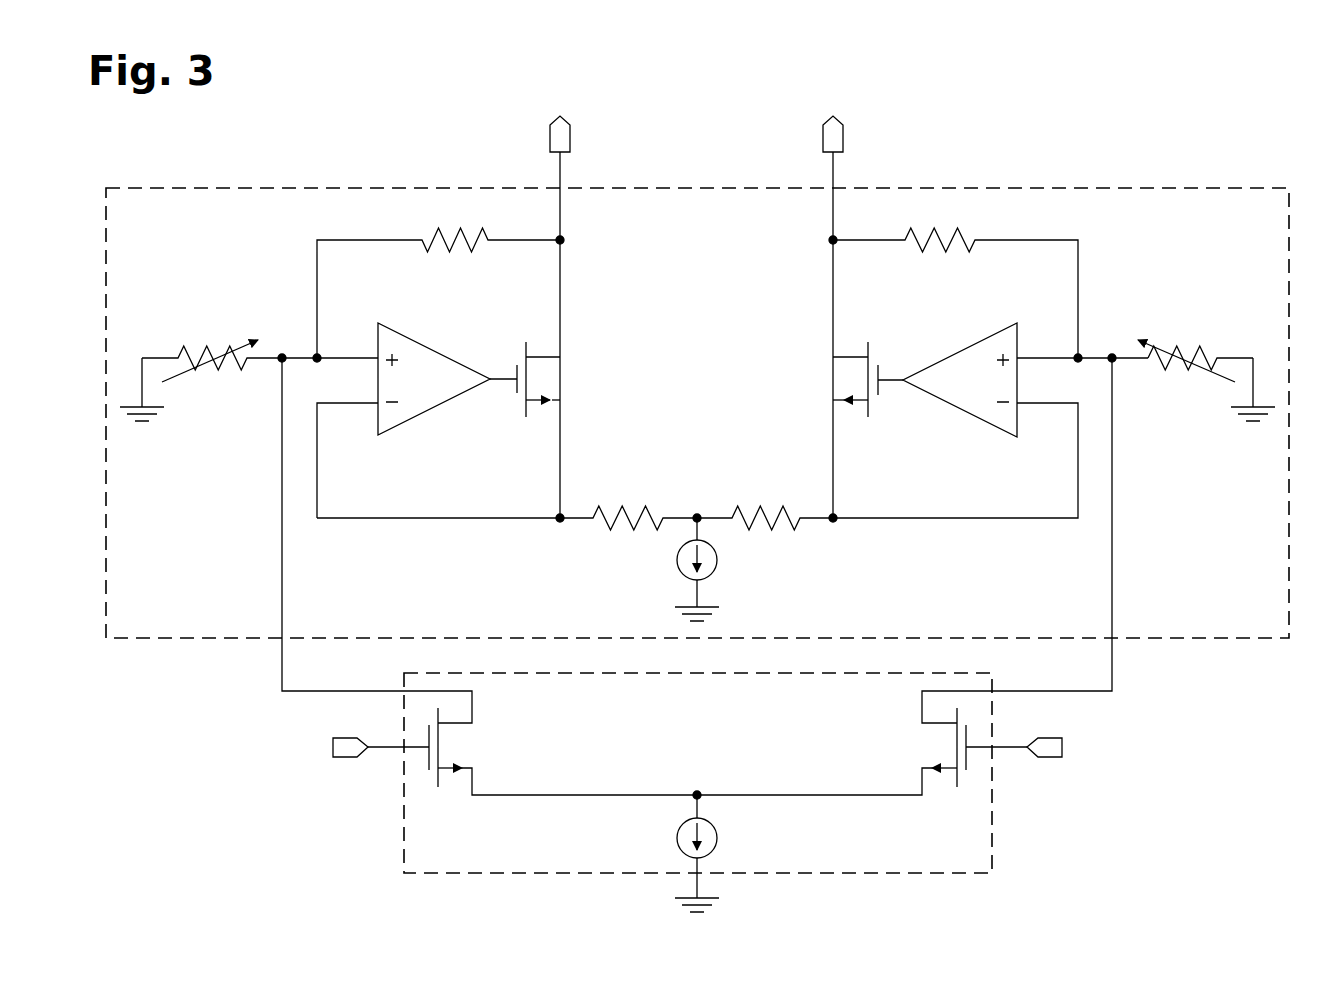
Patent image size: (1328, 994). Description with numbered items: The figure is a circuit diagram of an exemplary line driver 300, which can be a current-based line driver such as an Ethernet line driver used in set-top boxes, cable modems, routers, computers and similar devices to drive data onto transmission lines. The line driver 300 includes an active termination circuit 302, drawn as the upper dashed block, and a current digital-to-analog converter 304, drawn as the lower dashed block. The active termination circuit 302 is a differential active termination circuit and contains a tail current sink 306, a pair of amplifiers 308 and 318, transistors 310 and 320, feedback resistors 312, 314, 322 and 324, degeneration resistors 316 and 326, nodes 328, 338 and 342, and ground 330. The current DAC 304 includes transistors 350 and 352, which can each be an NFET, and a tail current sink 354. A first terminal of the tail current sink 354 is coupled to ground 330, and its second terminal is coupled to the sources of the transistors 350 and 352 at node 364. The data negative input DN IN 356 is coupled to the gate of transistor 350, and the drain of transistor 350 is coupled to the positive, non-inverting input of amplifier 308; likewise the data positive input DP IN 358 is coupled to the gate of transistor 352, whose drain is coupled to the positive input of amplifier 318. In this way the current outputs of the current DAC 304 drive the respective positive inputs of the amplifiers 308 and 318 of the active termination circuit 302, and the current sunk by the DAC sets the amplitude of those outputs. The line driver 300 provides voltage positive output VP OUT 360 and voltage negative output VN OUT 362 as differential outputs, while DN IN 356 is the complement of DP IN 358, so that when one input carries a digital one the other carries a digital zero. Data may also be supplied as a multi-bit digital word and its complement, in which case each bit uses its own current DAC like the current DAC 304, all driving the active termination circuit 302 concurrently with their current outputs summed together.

The line driver 300 is at (1192, 138).
The active termination circuit 302 is at (363, 187).
The current digital-to-analog converter 304 is at (993, 850).
The tail current sink 306 is at (718, 562).
The amplifier 308 is at (432, 348).
The transistor 310 is at (548, 357).
The feedback resistor 312 is at (210, 348).
The feedback resistor 314 is at (452, 237).
The degeneration resistor 316 is at (622, 512).
The amplifier 318 is at (966, 346).
The transistor 320 is at (845, 356).
The feedback resistor 322 is at (1213, 350).
The feedback resistor 324 is at (956, 237).
The degeneration resistor 326 is at (760, 512).
The node 328 is at (697, 512).
The ground 330 is at (150, 406).
The node 338 is at (565, 242).
The node 342 is at (828, 240).
The transistor 350 is at (455, 725).
The transistor 352 is at (940, 725).
The tail current sink 354 is at (718, 840).
The data negative input (DN IN) 356 is at (350, 758).
The data positive input (DP IN) 358 is at (1044, 758).
The voltage positive output (VP OUT) 360 is at (572, 137).
The voltage negative output (VN OUT) 362 is at (821, 134).
The node 364 is at (697, 790).